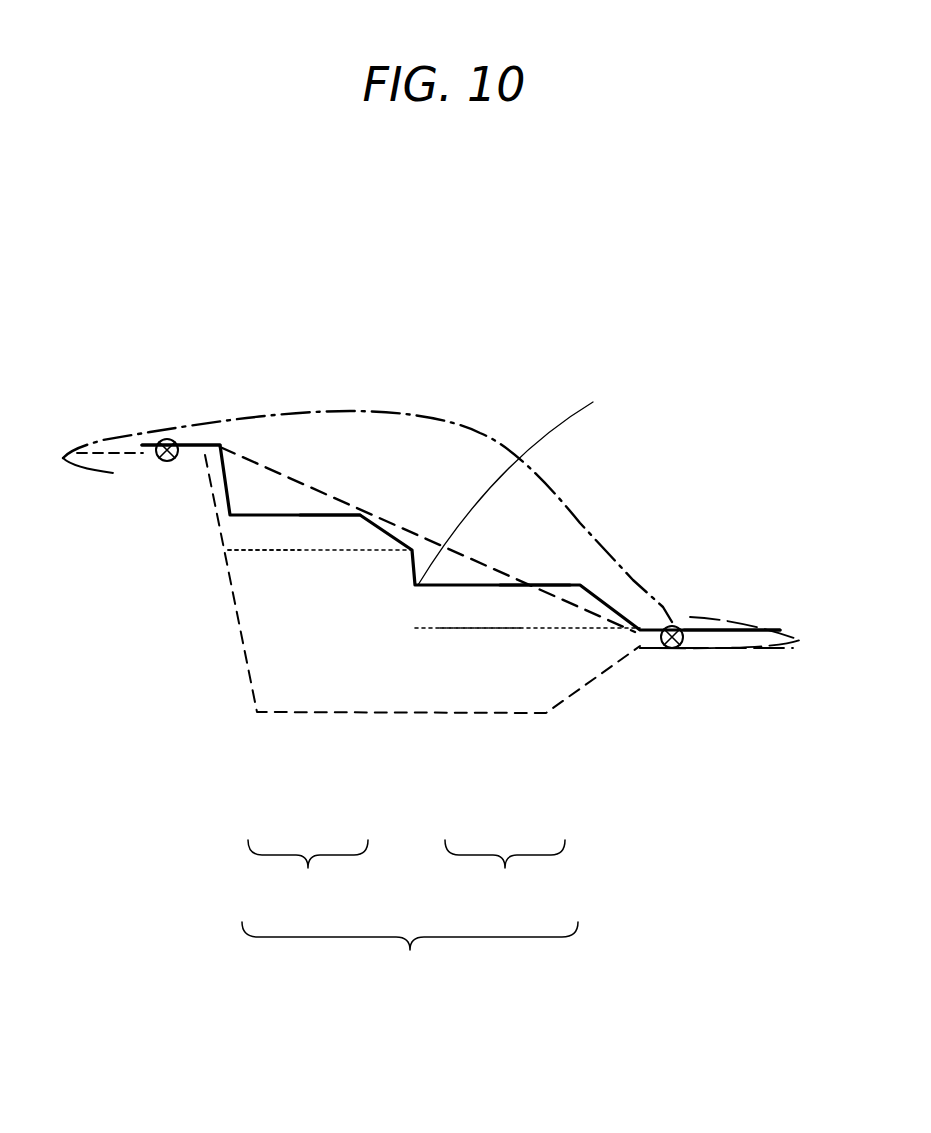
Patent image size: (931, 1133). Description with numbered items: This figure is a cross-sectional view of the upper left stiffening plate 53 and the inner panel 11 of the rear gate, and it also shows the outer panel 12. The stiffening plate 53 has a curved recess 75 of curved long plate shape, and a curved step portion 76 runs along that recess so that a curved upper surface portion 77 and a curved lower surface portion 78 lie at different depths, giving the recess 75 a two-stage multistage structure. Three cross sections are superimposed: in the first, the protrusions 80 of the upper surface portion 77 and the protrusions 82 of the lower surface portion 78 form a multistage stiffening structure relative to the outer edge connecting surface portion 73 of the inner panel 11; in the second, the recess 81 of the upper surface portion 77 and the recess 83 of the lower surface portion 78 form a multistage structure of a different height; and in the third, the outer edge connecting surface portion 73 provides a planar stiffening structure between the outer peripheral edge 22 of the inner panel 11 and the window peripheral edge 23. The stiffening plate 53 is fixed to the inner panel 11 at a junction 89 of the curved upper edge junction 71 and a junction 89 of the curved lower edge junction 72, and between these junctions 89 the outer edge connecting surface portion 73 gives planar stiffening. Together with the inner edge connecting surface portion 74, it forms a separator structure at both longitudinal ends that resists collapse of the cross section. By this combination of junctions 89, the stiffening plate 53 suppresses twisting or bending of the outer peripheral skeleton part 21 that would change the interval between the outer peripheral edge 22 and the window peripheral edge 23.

The inner panel 11 is at (615, 763).
The outer panel 12 is at (480, 433).
The outer peripheral skeleton part 21 is at (227, 663).
The outer peripheral edge 22 is at (122, 468).
The window peripheral edge 23 is at (698, 663).
The upper left stiffening plate 53 is at (363, 492).
The curved upper edge junction 71 is at (183, 458).
The curved lower edge junction 72 is at (710, 634).
The outer edge connecting surface portion 73 is at (297, 477).
The inner edge connecting surface portion 74 is at (427, 468).
The curved recess 75 is at (461, 716).
The curved step portion 76 is at (524, 485).
The curved upper surface portion 77 is at (308, 871).
The curved lower surface portion 78 is at (505, 871).
The protrusions 80 is at (335, 517).
The recess 81 is at (280, 552).
The protrusions 82 is at (530, 587).
The recess 83 is at (480, 630).
The junction 89 is at (167, 438).